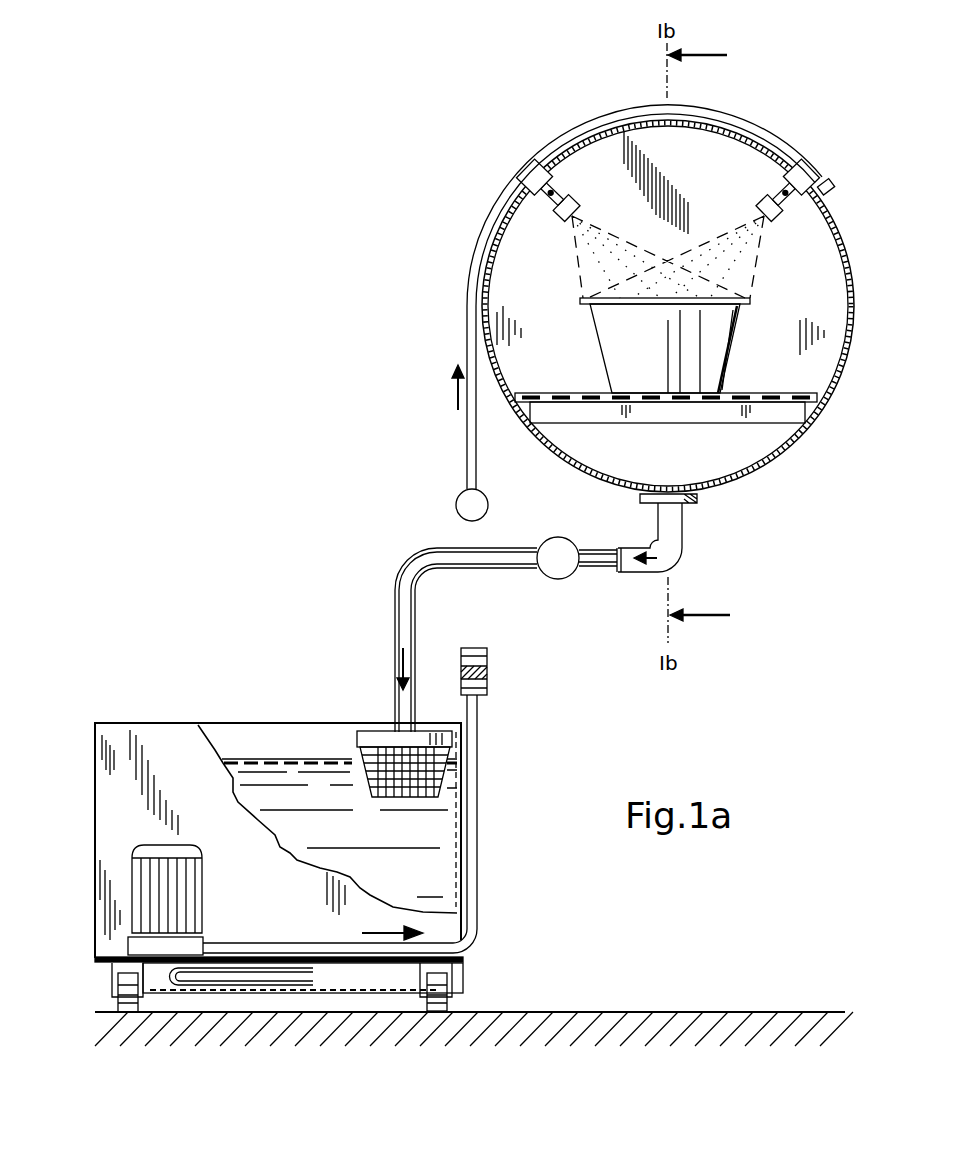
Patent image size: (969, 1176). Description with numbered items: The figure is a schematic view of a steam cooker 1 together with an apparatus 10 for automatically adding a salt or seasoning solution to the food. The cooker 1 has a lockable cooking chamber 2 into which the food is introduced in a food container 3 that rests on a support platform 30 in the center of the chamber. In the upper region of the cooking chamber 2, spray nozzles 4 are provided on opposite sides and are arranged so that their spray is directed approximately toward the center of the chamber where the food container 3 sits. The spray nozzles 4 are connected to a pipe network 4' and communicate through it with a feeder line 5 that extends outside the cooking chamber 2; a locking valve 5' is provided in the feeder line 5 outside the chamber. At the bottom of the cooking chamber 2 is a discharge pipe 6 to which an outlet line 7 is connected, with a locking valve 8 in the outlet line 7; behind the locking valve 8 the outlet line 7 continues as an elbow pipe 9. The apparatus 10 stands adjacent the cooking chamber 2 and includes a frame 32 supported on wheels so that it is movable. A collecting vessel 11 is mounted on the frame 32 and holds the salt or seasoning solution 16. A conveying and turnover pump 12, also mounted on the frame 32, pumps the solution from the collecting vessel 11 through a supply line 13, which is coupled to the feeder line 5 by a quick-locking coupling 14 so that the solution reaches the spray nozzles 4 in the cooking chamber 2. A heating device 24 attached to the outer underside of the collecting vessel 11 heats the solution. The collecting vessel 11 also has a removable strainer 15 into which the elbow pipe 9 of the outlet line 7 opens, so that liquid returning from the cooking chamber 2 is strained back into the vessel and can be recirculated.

The cooker 1 is at (802, 437).
The cooking chamber 2 is at (797, 296).
The food container 3 is at (662, 366).
The spray nozzles 4 is at (668, 228).
The pipe network 4' is at (837, 196).
The feeder line 5 is at (626, 297).
The locking valve 5' is at (454, 495).
The discharge pipe 6 is at (684, 527).
The outlet line 7 is at (600, 568).
The locking valve 8 is at (560, 580).
The elbow pipe 9 is at (409, 580).
The apparatus 10 is at (167, 700).
The collecting vessel 11 is at (113, 735).
The conveying and turnover pump 12 is at (207, 880).
The supply line 13 is at (478, 838).
The quick-locking coupling 14 is at (488, 672).
The removable strainer 15 is at (367, 798).
The salt or seasoning solution 16 is at (248, 758).
The heating device 24 is at (270, 967).
The support platform 30 is at (556, 393).
The frame 32 is at (98, 963).